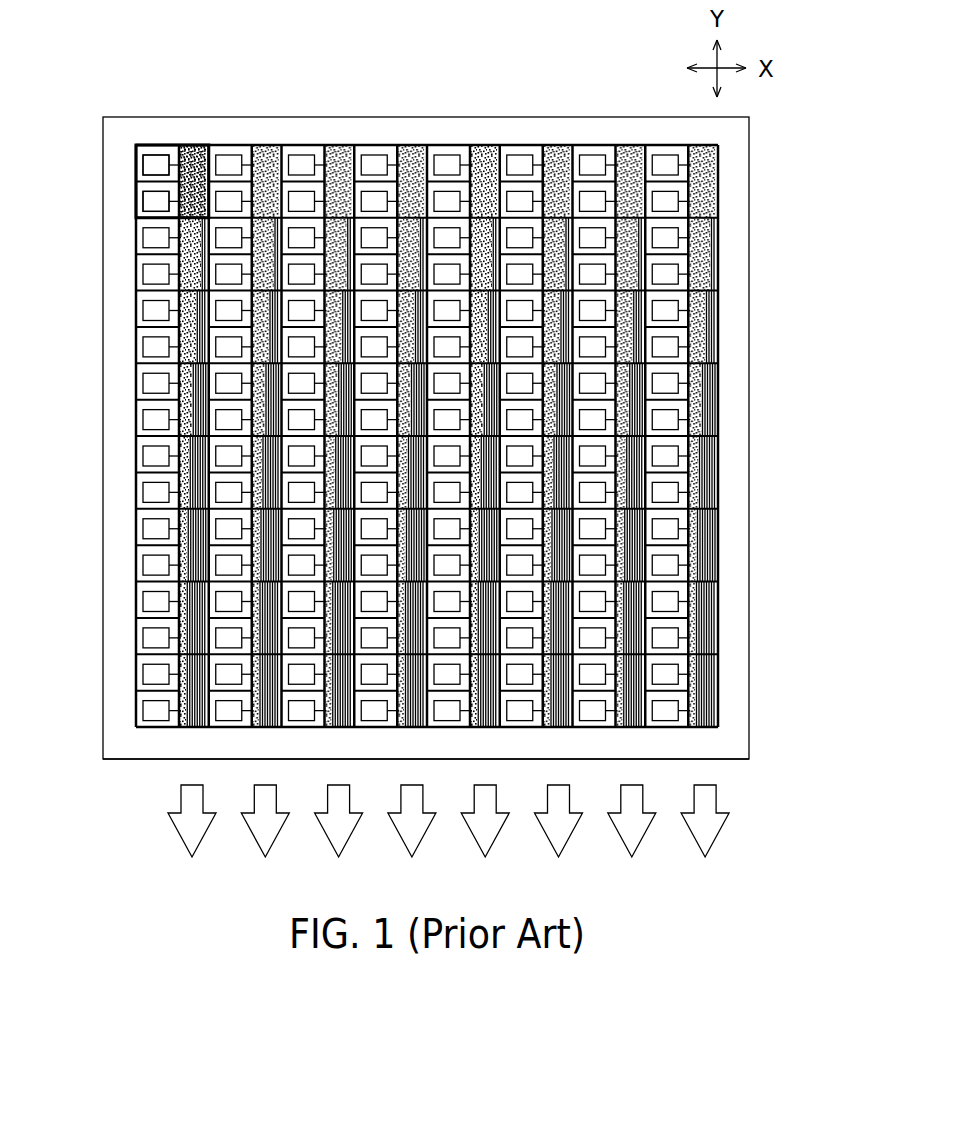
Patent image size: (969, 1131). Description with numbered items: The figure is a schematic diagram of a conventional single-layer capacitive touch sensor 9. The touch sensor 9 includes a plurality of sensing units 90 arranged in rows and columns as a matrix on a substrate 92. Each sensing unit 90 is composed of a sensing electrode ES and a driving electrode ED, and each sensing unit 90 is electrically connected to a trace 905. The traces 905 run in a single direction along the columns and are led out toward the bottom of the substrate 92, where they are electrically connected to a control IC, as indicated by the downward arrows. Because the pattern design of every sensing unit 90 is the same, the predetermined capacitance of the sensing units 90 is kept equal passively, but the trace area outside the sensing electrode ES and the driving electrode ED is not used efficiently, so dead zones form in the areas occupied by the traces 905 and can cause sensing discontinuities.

The single-layer capacitive touch sensor 9 is at (594, 91).
The sensing unit 90 is at (188, 147).
The trace 905 is at (203, 146).
The substrate 92 is at (130, 762).
The driving electrode ED is at (157, 167).
The sensing electrode ES is at (157, 183).